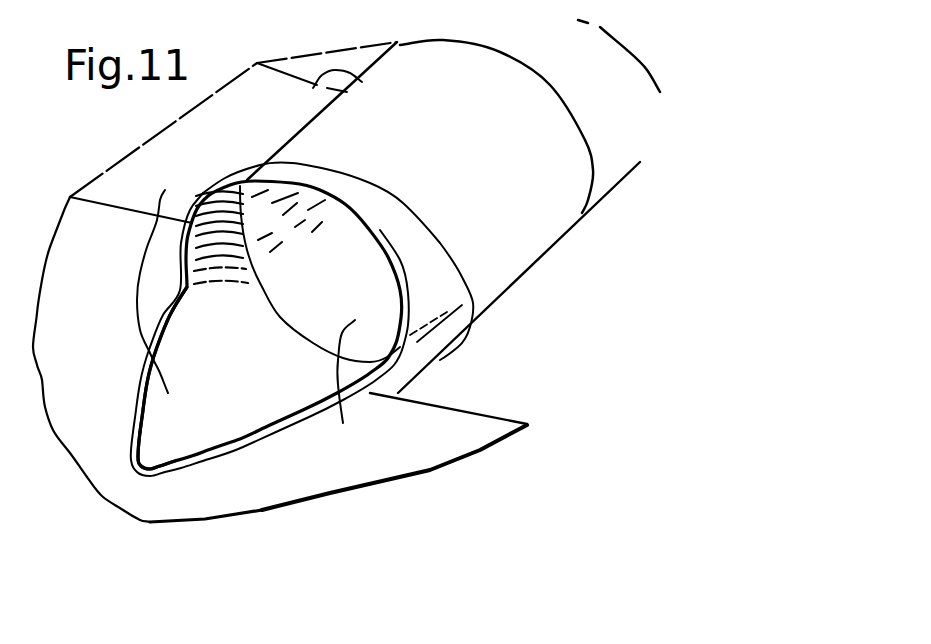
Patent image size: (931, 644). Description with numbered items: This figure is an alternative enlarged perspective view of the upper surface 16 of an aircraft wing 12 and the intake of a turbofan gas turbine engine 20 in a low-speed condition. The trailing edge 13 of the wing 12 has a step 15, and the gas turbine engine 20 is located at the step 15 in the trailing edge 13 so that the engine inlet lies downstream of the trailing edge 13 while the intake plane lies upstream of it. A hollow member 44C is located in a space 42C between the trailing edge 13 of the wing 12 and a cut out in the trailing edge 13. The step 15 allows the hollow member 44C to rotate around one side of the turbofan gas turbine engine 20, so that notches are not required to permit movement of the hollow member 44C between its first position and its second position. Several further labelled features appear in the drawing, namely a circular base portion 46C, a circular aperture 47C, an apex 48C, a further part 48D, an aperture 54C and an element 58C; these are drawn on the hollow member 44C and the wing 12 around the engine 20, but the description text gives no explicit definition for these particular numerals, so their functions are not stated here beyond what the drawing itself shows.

The turbofan gas turbine engine 20 is at (497, 101).
The wing 12 is at (93, 250).
The step 15 is at (333, 74).
The trailing edge 13 is at (477, 410).
The upper surface 16 is at (440, 443).
The outer ring flange 46C is at (427, 253).
The hollow member 44C is at (437, 312).
The space 42C is at (437, 357).
The sleeve side wall 54C is at (158, 355).
The slot lower end 48C is at (147, 462).
The slot edge 48D is at (157, 346).
The sleeve inner wall 58C is at (192, 213).
The bore 47C is at (320, 324).